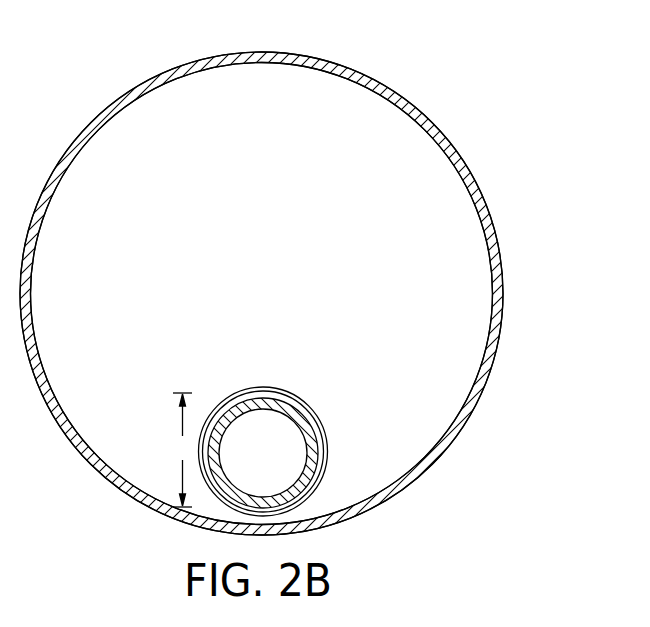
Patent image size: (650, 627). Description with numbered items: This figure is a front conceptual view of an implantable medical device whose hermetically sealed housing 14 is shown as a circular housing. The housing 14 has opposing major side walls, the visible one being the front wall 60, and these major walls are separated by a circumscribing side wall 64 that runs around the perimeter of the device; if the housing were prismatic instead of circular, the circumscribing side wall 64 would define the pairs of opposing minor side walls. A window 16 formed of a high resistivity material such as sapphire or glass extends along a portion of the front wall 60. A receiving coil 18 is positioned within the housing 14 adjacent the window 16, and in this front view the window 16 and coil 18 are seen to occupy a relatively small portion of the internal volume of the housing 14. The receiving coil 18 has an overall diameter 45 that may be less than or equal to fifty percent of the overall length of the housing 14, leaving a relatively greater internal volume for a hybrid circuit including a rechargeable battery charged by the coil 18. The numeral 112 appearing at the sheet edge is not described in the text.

The housing 14 is at (505, 302).
The front wall 60 is at (448, 238).
The circumscribing side wall 64 is at (250, 52).
The window 16 is at (323, 460).
The receiving coil 18 is at (241, 400).
The overall diameter 45 is at (184, 450).
The adjacent figure element 112 is at (85, 626).